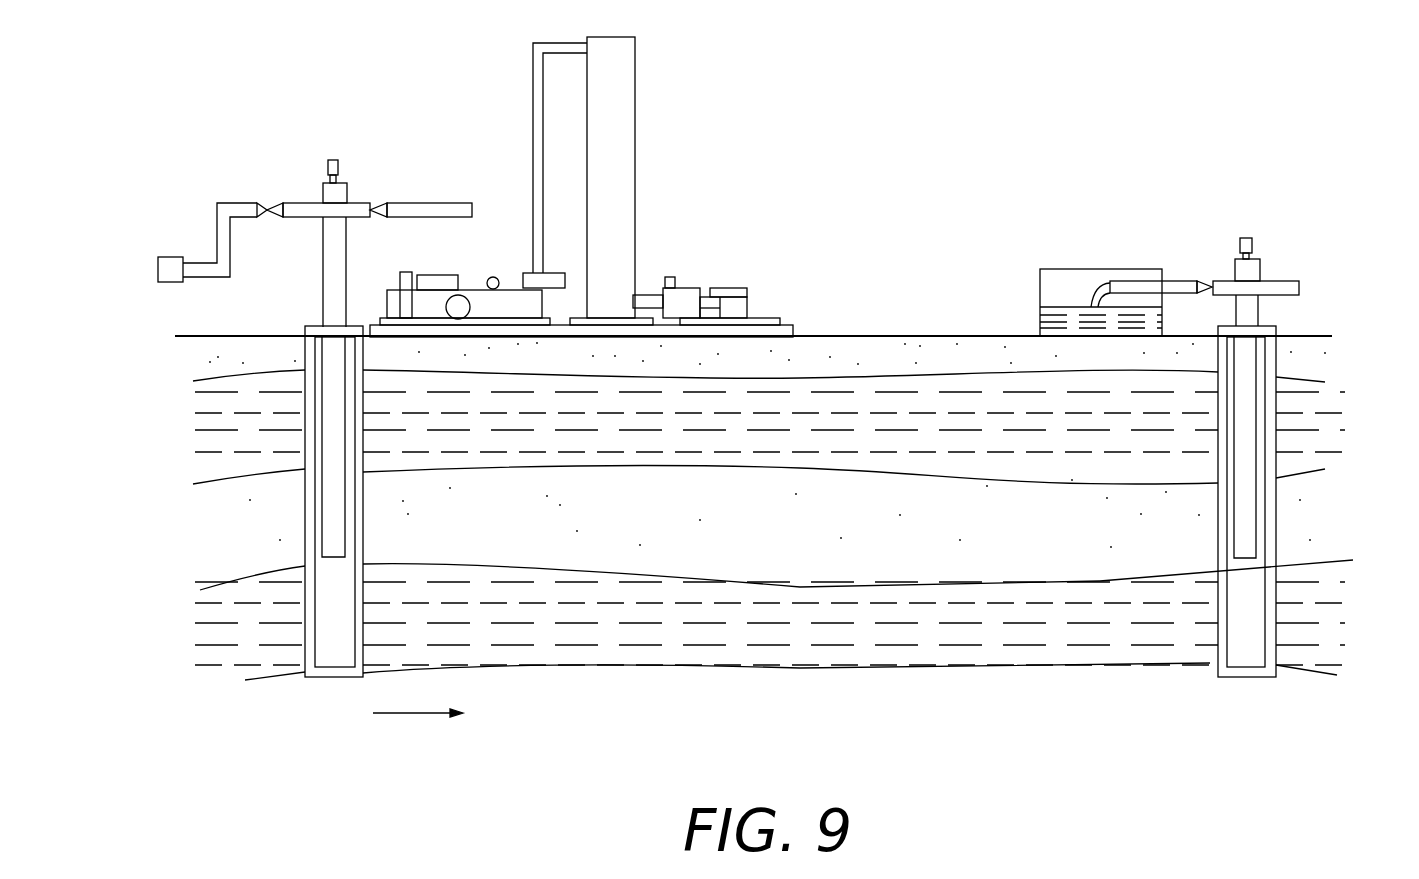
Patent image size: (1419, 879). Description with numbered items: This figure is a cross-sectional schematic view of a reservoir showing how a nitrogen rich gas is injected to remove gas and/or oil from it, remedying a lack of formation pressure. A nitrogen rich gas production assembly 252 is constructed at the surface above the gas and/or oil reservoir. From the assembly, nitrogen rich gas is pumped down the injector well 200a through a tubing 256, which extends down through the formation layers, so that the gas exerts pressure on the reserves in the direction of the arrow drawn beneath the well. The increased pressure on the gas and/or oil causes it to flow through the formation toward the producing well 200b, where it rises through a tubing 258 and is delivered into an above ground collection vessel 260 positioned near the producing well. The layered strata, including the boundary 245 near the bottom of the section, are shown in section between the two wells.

The rig / pumping unit on surface platform 252 is at (672, 97).
The fluid tank 260 is at (1062, 269).
The first well 200a is at (305, 447).
The second well 200b is at (1276, 530).
The tubing in first well 256 is at (322, 498).
The tubing in second well 258 is at (1253, 540).
The lower formation boundary 245 is at (1027, 667).